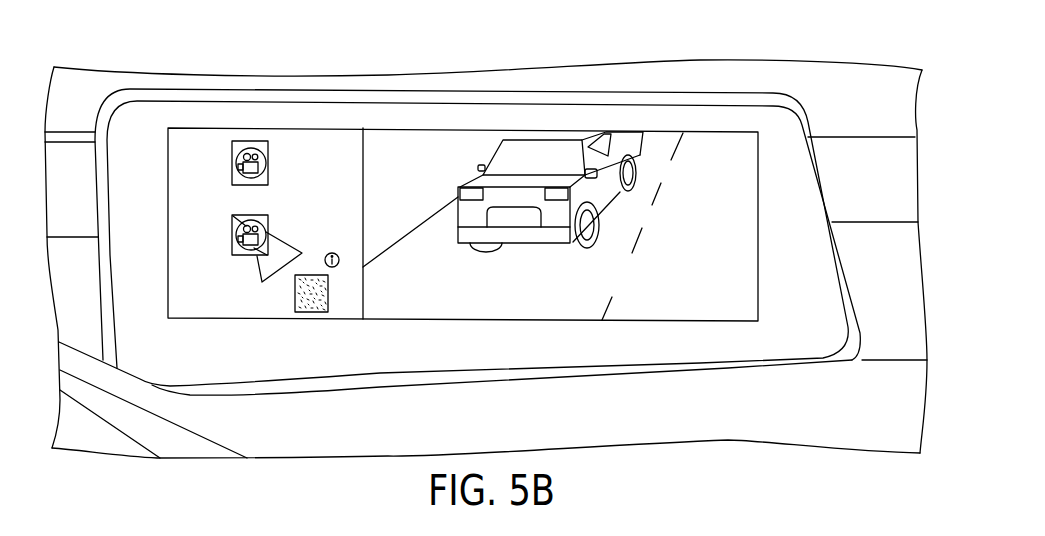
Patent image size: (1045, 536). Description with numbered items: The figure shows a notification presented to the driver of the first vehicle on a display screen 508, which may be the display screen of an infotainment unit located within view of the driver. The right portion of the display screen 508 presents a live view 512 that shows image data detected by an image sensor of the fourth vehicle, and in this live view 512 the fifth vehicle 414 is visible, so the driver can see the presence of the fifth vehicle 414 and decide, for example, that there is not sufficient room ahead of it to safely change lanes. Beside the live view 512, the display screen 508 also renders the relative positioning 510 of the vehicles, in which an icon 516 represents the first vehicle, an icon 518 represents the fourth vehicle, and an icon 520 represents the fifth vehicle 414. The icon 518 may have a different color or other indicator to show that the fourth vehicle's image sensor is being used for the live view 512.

The display screen 508 is at (148, 89).
The relative positioning 510 is at (203, 150).
The live view 512 is at (435, 152).
The fifth vehicle 414 is at (558, 150).
The icon representing the first vehicle 516 is at (270, 165).
The icon representing the fourth vehicle 518 is at (270, 223).
The icon representing the fifth vehicle 520 is at (295, 293).